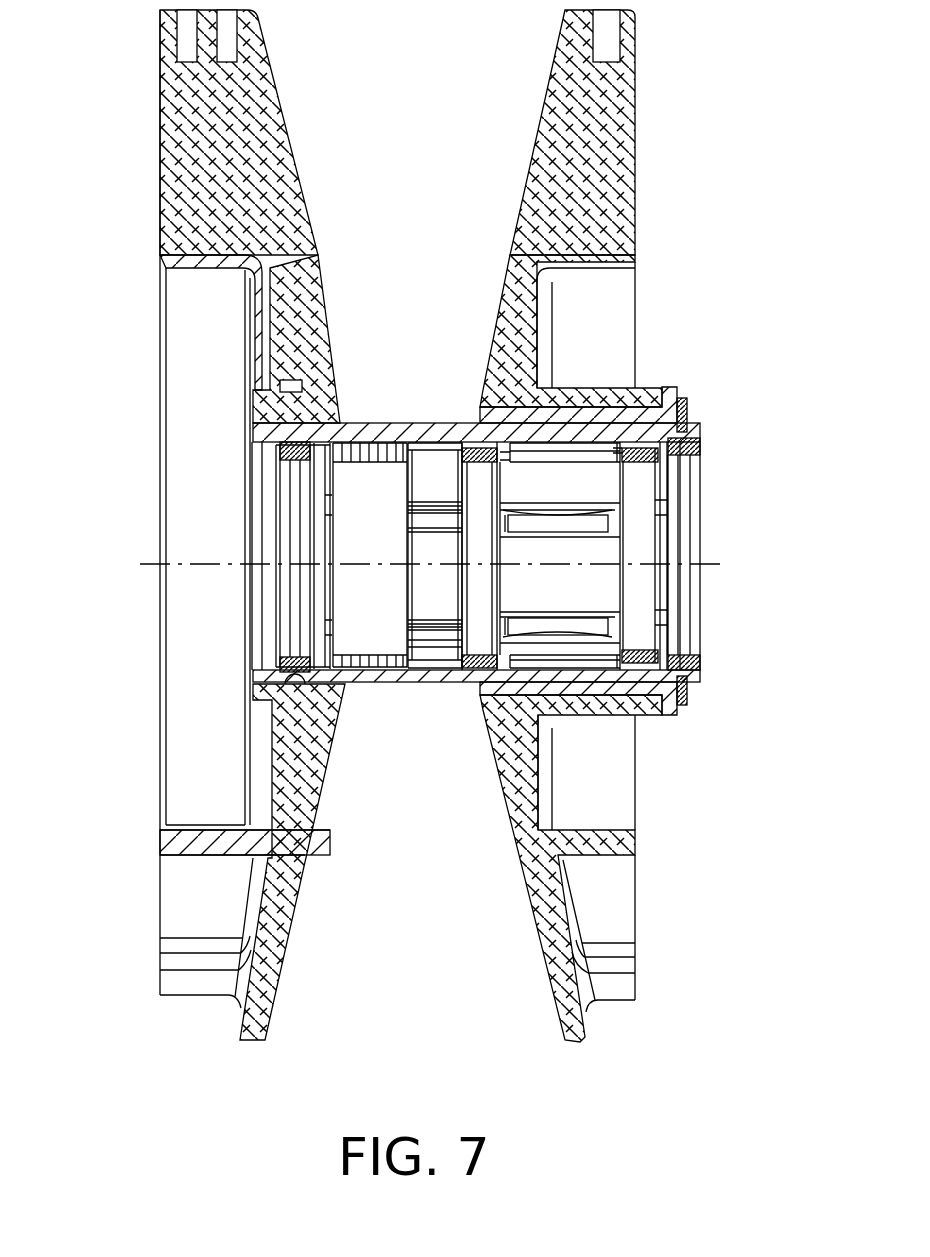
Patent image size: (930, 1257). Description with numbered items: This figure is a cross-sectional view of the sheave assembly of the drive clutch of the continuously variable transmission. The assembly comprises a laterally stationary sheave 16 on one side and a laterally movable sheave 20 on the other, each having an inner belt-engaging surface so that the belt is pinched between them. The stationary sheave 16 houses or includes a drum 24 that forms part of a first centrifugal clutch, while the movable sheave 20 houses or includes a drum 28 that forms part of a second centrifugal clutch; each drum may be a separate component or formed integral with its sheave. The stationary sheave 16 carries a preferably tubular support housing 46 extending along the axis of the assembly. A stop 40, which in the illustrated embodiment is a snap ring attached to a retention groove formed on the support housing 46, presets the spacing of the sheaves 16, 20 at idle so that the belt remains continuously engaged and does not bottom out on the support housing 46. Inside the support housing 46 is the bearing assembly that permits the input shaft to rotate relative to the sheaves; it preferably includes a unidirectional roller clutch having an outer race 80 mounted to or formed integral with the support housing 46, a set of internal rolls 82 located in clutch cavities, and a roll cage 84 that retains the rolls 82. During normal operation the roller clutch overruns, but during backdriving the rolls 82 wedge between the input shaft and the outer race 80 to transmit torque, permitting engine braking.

The laterally stationary sheave 16 is at (138, 102).
The laterally movable sheave 20 is at (635, 143).
The drum 24 is at (213, 262).
The drum 28 is at (635, 260).
The stop 40 is at (690, 410).
The roll cage 84 is at (700, 437).
The internal rolls 82 is at (555, 630).
The outer race 80 is at (500, 713).
The support housing 46 is at (660, 705).